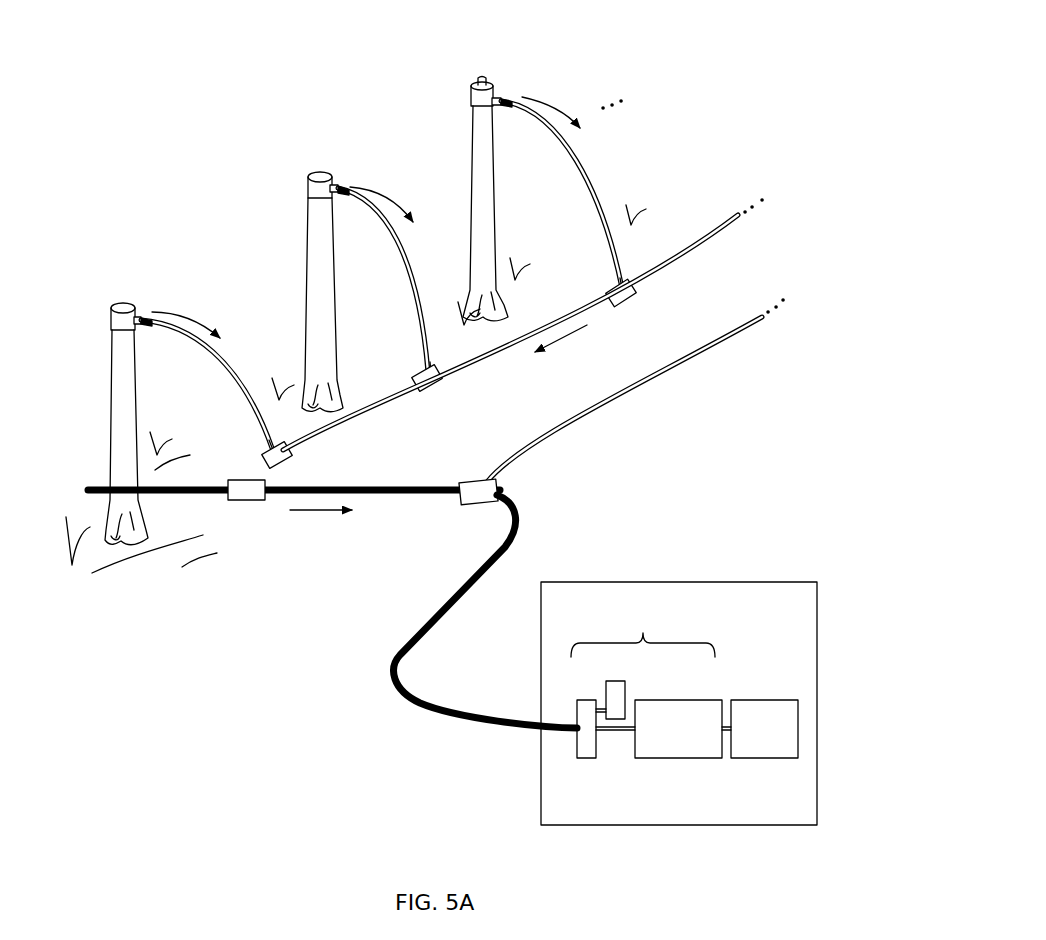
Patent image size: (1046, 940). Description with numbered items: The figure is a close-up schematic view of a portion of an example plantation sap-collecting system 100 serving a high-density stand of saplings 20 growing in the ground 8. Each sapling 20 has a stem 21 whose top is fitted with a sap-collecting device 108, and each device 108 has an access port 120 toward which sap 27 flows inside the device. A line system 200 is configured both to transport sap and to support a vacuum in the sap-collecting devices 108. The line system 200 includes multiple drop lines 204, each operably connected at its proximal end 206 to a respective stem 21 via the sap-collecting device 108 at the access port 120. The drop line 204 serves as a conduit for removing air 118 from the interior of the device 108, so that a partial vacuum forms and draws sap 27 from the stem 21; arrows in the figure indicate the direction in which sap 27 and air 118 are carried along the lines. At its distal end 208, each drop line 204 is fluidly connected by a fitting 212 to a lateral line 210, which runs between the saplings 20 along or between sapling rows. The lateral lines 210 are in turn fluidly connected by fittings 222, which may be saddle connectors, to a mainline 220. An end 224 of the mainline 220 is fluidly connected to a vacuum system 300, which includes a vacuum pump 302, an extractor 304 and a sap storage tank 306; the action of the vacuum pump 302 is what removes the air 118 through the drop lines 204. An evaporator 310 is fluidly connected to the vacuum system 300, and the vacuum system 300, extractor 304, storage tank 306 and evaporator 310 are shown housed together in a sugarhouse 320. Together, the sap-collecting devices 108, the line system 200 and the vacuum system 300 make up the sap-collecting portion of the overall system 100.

The plantation sap-collecting system 100 is at (247, 85).
The line system 200 is at (640, 178).
The ground 8 is at (156, 597).
The sapling 20 is at (306, 325).
The stem 21 is at (128, 392).
The sap 27 is at (392, 309).
The air 118 is at (183, 310).
The sap-collecting device 108 is at (110, 304).
The access port 120 is at (137, 316).
The drop line 204 is at (232, 360).
The proximal end 206 is at (140, 326).
The distal end 208 is at (268, 451).
The lateral line 210 is at (384, 398).
The fitting 212 is at (290, 456).
The mainline 220 is at (388, 488).
The mainline fitting 222 is at (268, 486).
The end of mainline 224 is at (557, 739).
The vacuum system 300 is at (643, 627).
The vacuum pump 302 is at (626, 695).
The extractor 304 is at (585, 760).
The sap storage tank 306 is at (698, 744).
The evaporator 310 is at (784, 744).
The sugarhouse 320 is at (752, 582).